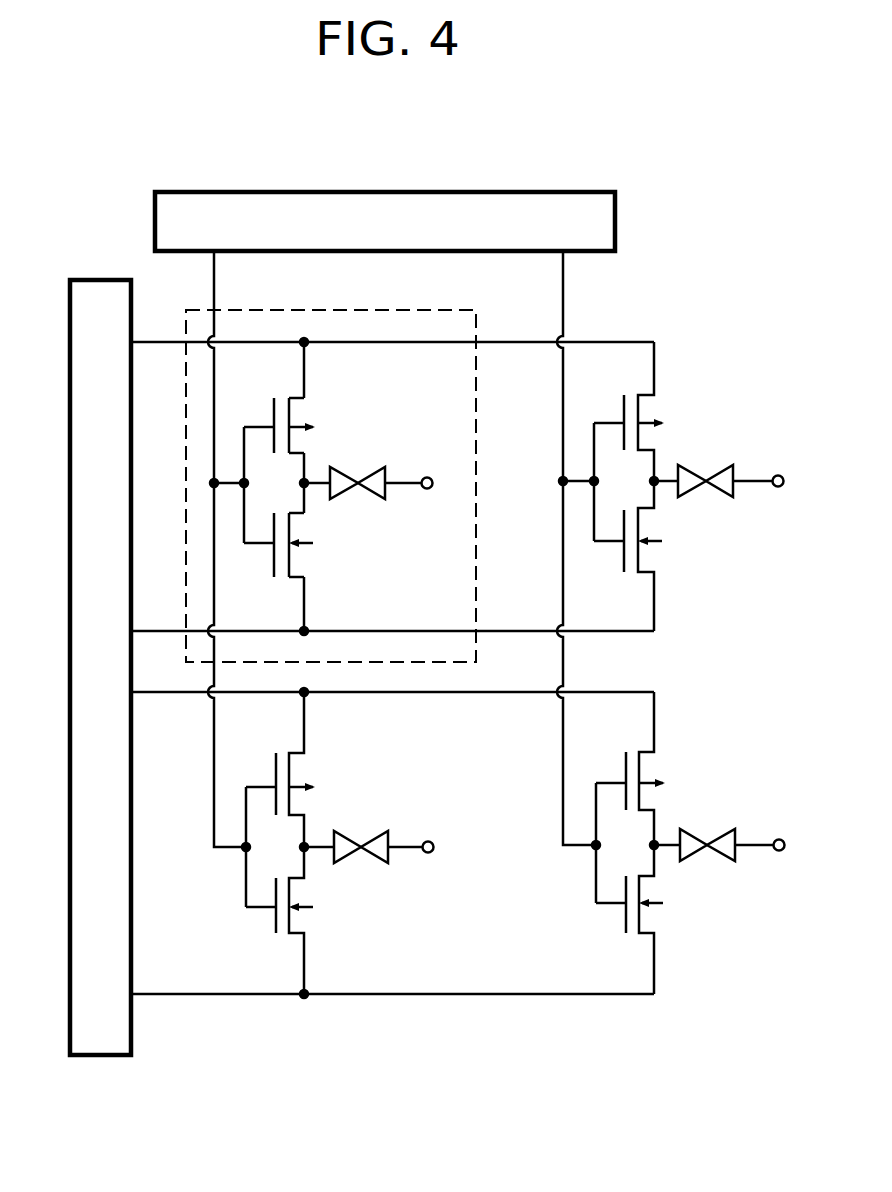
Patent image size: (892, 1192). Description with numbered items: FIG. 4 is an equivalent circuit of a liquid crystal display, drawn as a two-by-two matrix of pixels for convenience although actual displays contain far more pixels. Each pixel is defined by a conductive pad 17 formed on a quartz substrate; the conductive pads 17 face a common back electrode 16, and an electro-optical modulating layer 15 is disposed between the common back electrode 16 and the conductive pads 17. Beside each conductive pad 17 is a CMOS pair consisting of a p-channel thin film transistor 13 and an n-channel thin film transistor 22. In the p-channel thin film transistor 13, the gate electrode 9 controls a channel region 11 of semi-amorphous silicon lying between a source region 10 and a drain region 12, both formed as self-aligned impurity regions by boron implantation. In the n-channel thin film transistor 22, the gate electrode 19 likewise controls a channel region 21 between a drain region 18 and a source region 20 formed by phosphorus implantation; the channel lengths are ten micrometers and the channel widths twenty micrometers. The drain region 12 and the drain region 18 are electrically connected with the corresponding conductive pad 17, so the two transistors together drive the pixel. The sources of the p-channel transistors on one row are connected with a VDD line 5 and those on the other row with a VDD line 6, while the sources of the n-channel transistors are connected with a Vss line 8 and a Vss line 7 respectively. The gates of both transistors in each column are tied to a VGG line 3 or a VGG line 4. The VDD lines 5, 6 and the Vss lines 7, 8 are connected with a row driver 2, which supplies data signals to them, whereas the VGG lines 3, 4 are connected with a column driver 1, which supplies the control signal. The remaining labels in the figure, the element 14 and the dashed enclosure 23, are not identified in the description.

The column driver 1 is at (386, 192).
The row driver 2 is at (70, 748).
The VGG line 3 is at (218, 276).
The VGG line 4 is at (567, 278).
The VDD line 5 is at (152, 346).
The VDD line 6 is at (153, 698).
The Vss line 7 is at (156, 990).
The Vss line 8 is at (152, 628).
The gate electrode 9 is at (262, 420).
The source region 10 is at (303, 388).
The channel region 11 is at (296, 416).
The drain region 12 is at (298, 449).
The p-channel thin film transistor 13 is at (362, 352).
The light emitting element electrode 14 is at (336, 468).
The electro-optical modulating layer 15 is at (383, 476).
The common back electrode 16 is at (386, 496).
The conductive pad 17 is at (326, 498).
The drain region 18 is at (304, 516).
The gate electrode 19 is at (297, 560).
The source region 20 is at (305, 586).
The channel region 21 is at (258, 552).
The n-channel thin film transistor 22 is at (366, 522).
The inverter cell 23 is at (478, 378).